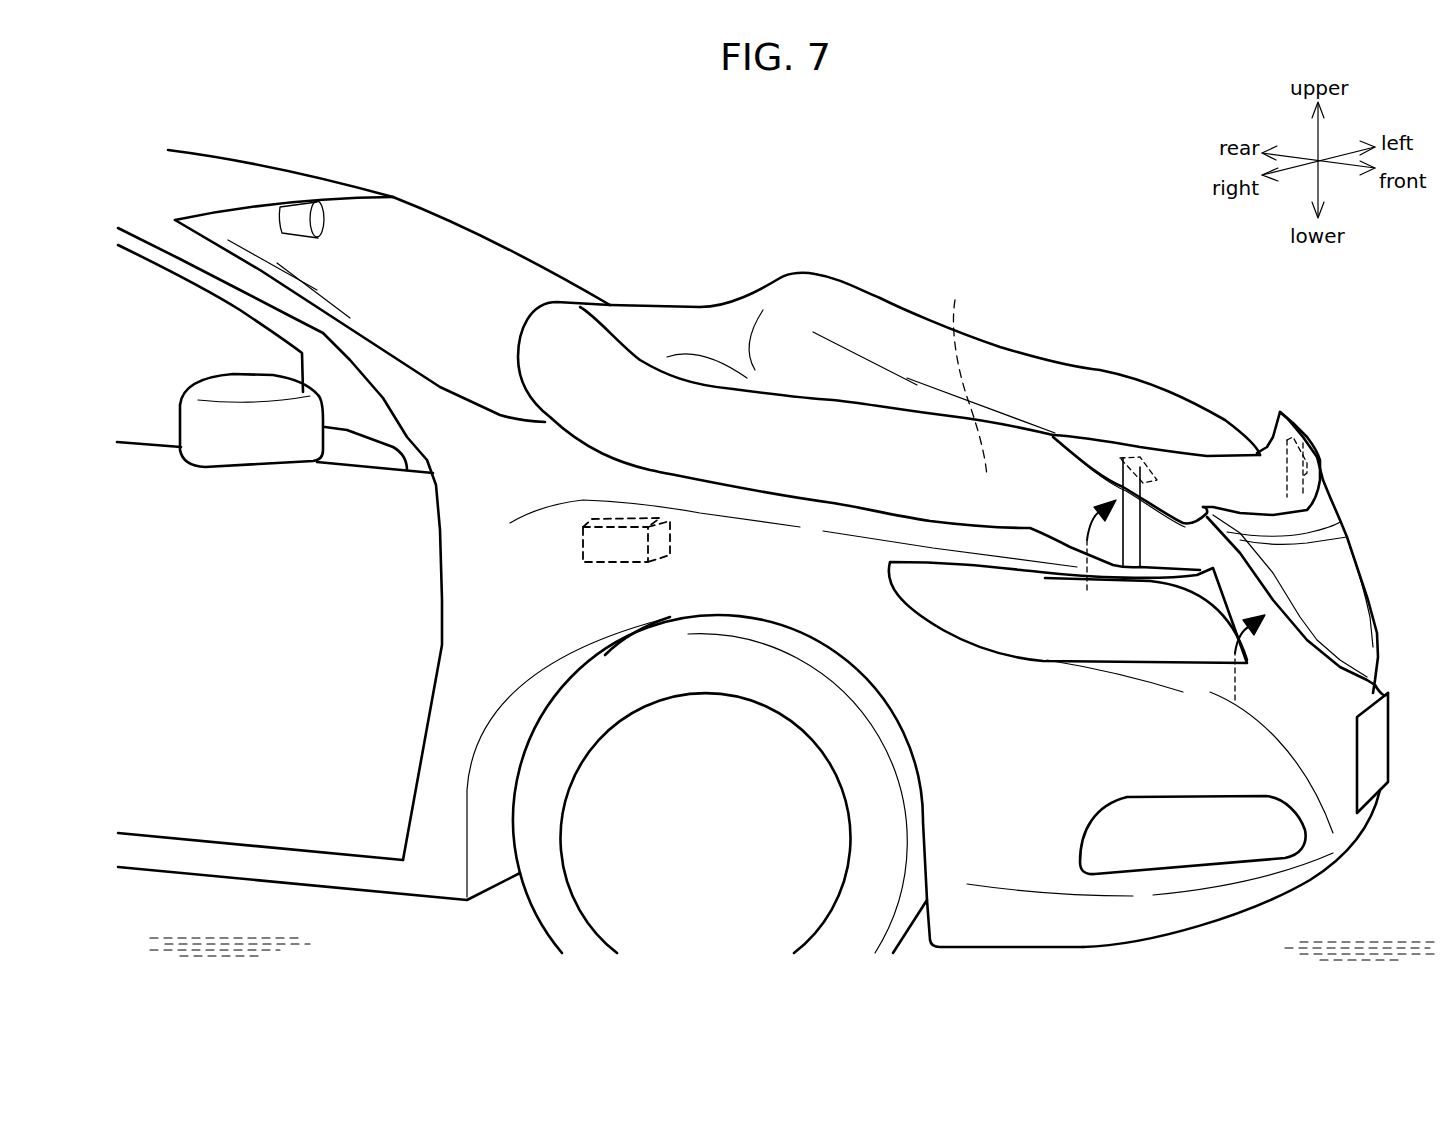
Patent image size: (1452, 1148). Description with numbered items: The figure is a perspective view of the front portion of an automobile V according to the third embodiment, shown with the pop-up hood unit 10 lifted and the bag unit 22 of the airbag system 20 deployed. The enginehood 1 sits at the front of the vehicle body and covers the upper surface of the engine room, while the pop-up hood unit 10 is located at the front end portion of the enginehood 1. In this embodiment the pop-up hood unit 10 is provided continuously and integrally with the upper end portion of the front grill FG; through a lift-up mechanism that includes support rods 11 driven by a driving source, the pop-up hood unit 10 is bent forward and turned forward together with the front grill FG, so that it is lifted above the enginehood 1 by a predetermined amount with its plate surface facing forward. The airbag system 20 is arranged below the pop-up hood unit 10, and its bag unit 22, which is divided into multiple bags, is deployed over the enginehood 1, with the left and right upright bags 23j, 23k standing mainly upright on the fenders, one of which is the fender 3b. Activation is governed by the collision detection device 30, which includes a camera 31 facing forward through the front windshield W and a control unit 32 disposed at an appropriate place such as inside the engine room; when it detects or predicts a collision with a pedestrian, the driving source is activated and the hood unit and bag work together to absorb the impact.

The automobile V is at (463, 190).
The front windshield W is at (498, 273).
The enginehood 1 is at (966, 375).
The fender 3b is at (853, 517).
The pop-up hood unit 10 is at (1301, 422).
The support rods 11 is at (1137, 553).
The airbag system 20 is at (889, 375).
The bag unit 22 is at (890, 290).
The upright bag 23j is at (1017, 370).
The upright bag 23k is at (627, 410).
The collision detection device 30 is at (532, 348).
The camera 31 is at (298, 217).
The control unit 32 is at (672, 537).
The front grill FG is at (1367, 580).